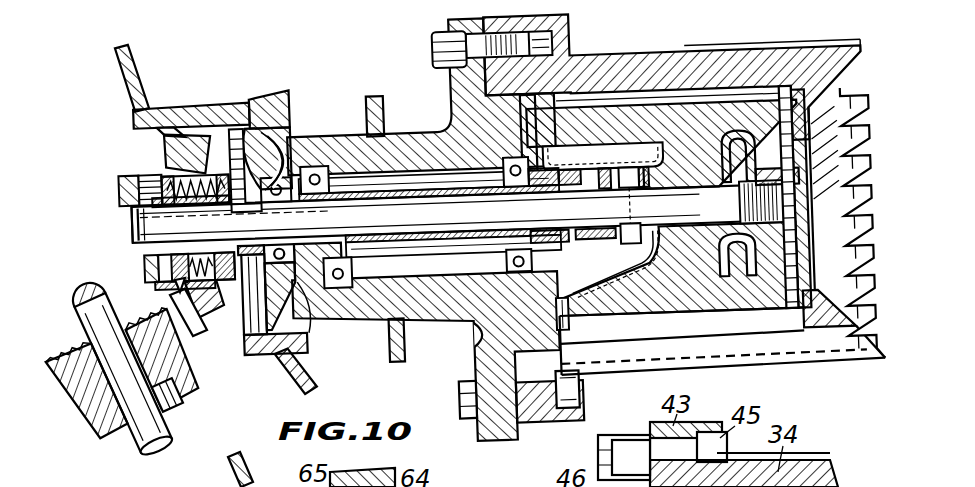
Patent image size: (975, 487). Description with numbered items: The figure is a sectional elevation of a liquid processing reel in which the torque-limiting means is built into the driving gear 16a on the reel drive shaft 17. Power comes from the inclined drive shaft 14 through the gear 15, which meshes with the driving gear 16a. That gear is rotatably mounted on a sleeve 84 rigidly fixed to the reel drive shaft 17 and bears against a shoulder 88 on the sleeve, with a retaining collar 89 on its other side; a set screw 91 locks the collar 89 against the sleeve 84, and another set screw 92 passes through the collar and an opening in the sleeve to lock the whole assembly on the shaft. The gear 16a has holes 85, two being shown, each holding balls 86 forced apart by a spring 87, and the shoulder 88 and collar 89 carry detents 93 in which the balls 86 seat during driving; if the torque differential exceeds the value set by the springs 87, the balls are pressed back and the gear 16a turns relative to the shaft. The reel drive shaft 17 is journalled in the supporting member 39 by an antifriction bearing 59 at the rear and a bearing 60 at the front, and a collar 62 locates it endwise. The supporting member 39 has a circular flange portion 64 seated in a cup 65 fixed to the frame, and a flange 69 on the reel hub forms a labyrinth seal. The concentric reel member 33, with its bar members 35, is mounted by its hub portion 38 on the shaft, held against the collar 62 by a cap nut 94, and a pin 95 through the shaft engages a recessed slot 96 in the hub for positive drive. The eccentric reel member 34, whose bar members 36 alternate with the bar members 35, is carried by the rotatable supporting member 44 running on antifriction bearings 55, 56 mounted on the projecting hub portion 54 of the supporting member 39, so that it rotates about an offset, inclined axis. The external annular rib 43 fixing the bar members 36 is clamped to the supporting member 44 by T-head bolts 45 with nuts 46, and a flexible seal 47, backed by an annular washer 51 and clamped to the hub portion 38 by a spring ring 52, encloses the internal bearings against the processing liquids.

The drive shaft 14 is at (143, 437).
The gear 15 is at (180, 355).
The driving gear 16a is at (173, 288).
The reel drive shaft 17 is at (414, 211).
The reel member 33 is at (681, 110).
The reel member 34 is at (598, 70).
The bar members 35 is at (852, 131).
The bar members 36 is at (862, 168).
The hub portion 38 is at (676, 162).
The supporting member 39 is at (312, 345).
The external annular rib 43 is at (528, 424).
The supporting member 44 is at (423, 142).
The T-head bolts 45 is at (447, 58).
The nuts 46 is at (440, 48).
The flexible seal 47 is at (830, 123).
The annular washer 51 is at (572, 314).
The spring ring 52 is at (626, 156).
The hub portion 54 is at (375, 241).
The antifriction bearing 55 is at (532, 182).
The antifriction bearing 56 is at (337, 315).
The antifriction bearing 59 is at (285, 198).
The bearing 60 is at (554, 183).
The collar 62 is at (604, 278).
The circular flange portion 64 is at (296, 121).
The cup 65 is at (285, 90).
The flange 69 is at (398, 345).
The sleeve 84 is at (228, 244).
The holes 85 is at (197, 200).
The balls 86 is at (170, 163).
The spring 87 is at (197, 150).
The shoulder 88 is at (203, 346).
The retaining collar 89 is at (130, 246).
The set screw 91 is at (143, 272).
The set screw 92 is at (143, 192).
The detents 93 is at (229, 185).
The cap nut 94 is at (781, 240).
The pin 95 is at (740, 211).
The recessed slot 96 is at (632, 196).